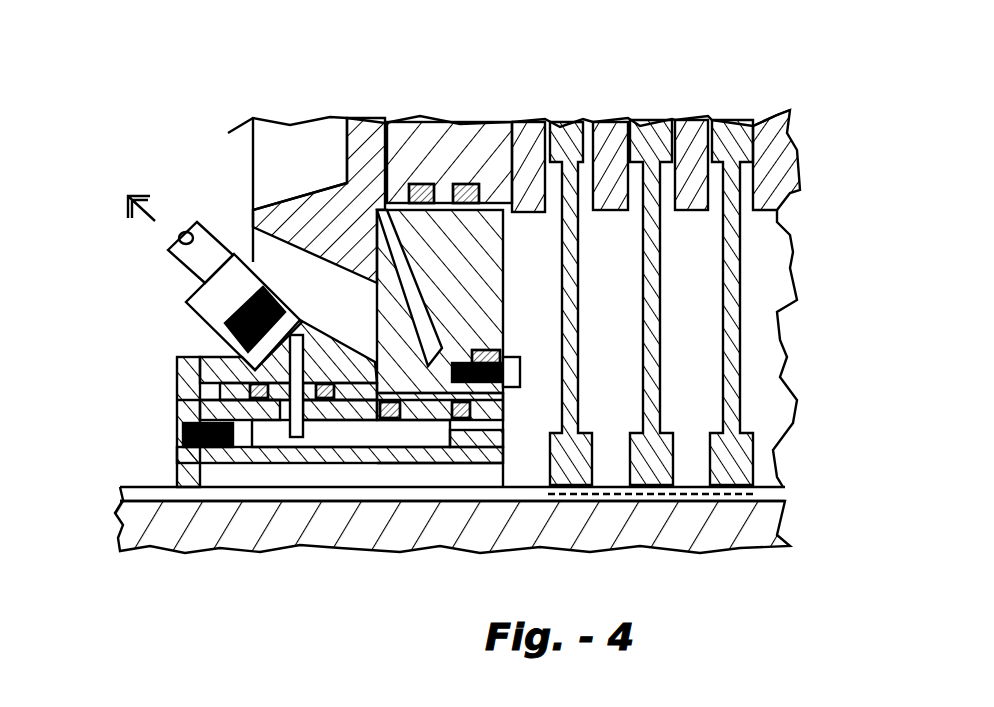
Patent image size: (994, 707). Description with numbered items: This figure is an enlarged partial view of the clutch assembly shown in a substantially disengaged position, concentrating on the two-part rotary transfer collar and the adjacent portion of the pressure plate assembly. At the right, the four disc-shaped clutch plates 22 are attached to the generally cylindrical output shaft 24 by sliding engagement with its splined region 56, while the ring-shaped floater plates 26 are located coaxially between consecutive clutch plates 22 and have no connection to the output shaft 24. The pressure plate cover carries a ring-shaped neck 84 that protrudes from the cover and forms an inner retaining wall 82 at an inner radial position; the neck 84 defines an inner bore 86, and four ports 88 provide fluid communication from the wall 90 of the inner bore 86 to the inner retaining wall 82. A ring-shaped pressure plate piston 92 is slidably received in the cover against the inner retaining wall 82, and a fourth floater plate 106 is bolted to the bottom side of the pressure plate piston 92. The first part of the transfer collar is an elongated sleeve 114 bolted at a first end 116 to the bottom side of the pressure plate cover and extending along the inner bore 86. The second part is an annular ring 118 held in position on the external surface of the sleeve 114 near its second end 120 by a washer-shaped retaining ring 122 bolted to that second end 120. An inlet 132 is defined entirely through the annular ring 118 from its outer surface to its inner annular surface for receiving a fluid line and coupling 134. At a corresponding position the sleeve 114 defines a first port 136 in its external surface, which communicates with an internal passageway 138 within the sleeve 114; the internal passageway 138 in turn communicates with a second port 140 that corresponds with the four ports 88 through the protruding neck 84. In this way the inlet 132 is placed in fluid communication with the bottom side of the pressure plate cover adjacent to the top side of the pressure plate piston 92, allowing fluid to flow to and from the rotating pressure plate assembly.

The clutch plate 22 is at (563, 127).
The output shaft 24 is at (170, 540).
The floater plate 26 is at (620, 127).
The splined region 56 is at (693, 492).
The inner retaining wall 82 is at (447, 222).
The neck 84 is at (462, 282).
The inner bore 86 is at (370, 491).
The port 88 is at (405, 292).
The wall of the inner bore 90 is at (442, 470).
The pressure plate piston 92 is at (453, 87).
The fourth floater plate 106 is at (522, 127).
The sleeve 114 is at (172, 387).
The first end 116 is at (530, 421).
The annular ring 118 is at (198, 343).
The second end 120 is at (178, 457).
The retaining ring 122 is at (177, 367).
The inlet 132 is at (310, 340).
The fluid line and coupling 134 is at (200, 292).
The first port 136 is at (183, 418).
The internal passageway 138 is at (330, 438).
The second port 140 is at (432, 413).